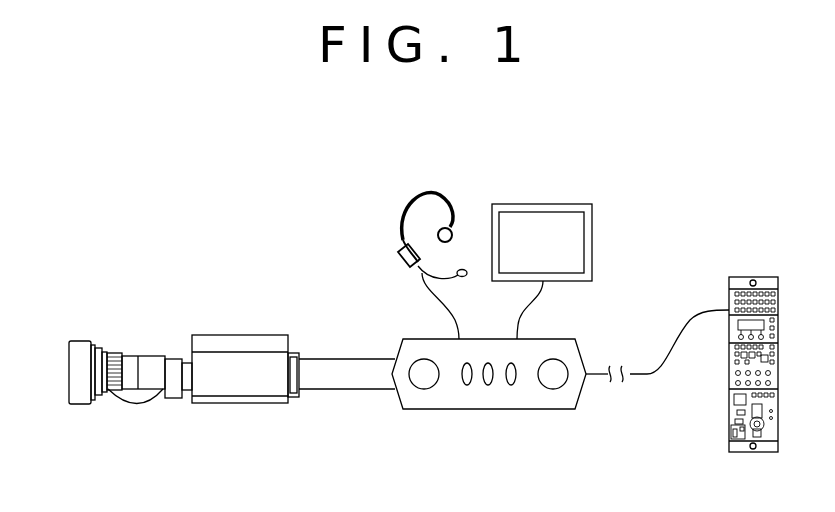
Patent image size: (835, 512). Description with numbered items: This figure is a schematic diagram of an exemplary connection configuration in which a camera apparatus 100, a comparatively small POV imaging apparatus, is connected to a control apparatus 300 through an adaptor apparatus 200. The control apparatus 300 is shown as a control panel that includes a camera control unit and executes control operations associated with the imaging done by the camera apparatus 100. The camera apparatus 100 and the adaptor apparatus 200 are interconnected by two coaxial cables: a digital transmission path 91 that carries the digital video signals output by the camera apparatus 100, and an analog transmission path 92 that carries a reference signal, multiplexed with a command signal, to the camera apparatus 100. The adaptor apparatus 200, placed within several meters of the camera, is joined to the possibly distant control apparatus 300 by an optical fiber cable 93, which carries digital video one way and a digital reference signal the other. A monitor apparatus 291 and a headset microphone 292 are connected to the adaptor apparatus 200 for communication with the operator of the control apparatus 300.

The camera apparatus 100 is at (240, 405).
The adaptor apparatus 200 is at (489, 410).
The control apparatus 300 is at (754, 276).
The digital transmission path 91 is at (345, 357).
The analog transmission path 92 is at (343, 391).
The optical fiber cable 93 is at (598, 382).
The monitor apparatus 291 is at (545, 203).
The headset microphone 292 is at (422, 190).